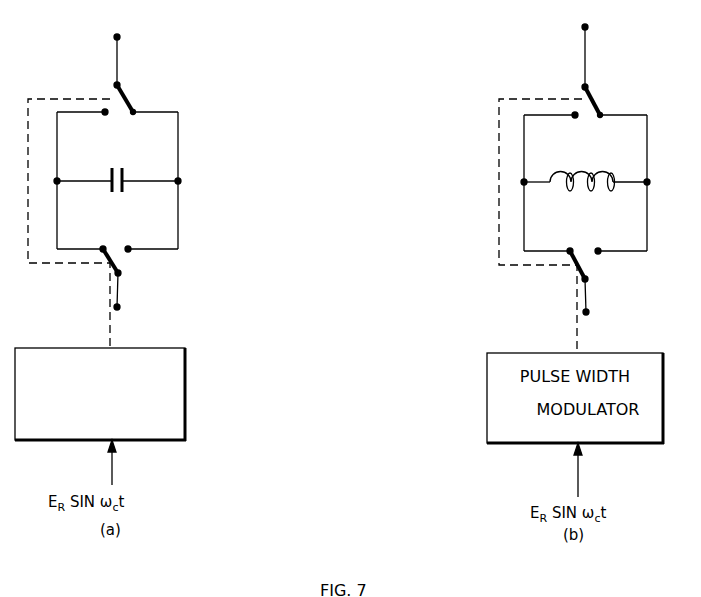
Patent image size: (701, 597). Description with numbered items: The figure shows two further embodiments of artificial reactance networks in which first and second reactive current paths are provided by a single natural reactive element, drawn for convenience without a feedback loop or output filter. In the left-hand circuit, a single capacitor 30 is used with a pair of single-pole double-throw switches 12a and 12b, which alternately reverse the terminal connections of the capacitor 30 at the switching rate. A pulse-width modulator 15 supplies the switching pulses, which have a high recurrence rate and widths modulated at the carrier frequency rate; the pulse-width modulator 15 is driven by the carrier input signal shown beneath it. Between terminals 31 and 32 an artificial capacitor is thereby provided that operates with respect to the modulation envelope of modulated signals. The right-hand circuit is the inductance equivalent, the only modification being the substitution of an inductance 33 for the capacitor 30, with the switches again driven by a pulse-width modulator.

The terminal 31 is at (117, 37).
The single-pole double-throw switch 12a is at (121, 93).
The capacitor 30 is at (125, 174).
The single-pole double-throw switch 12b is at (113, 248).
The terminal 32 is at (118, 306).
The pulse-width modulator 15 is at (187, 372).
The inductance 33 is at (574, 168).